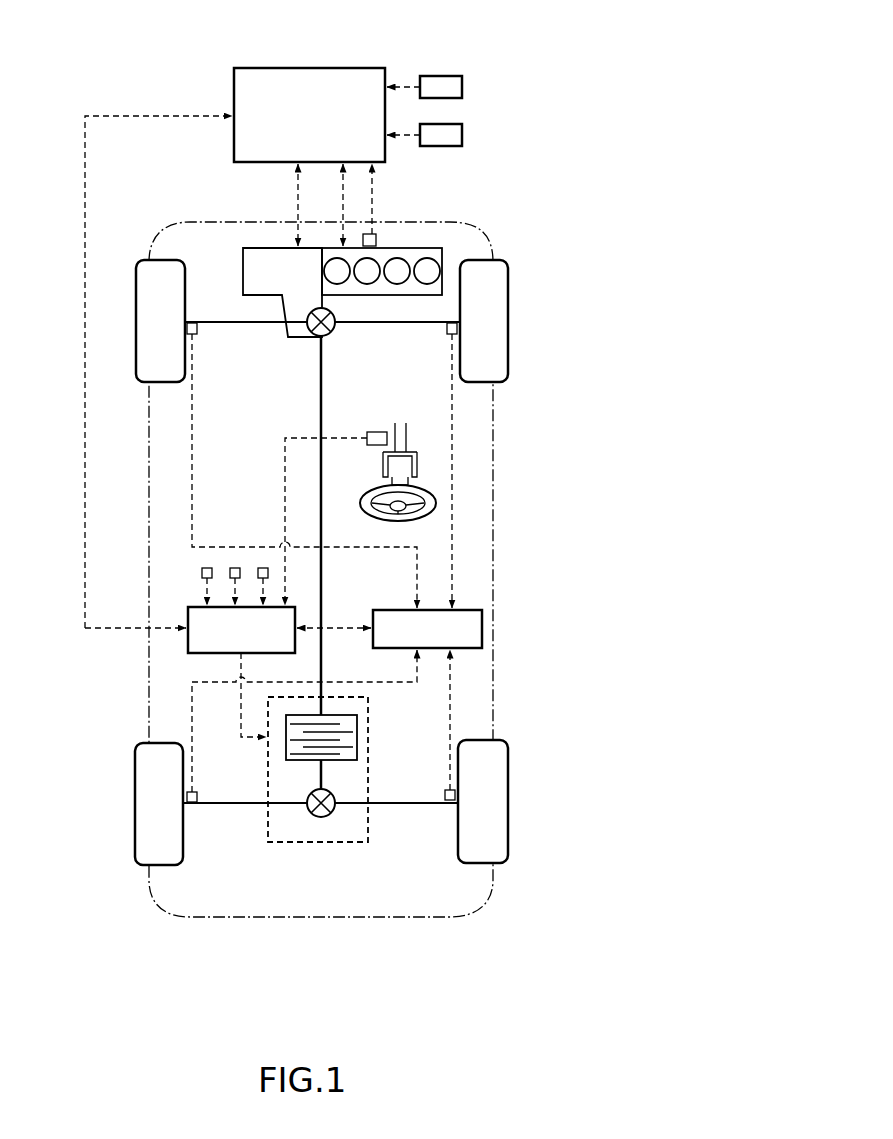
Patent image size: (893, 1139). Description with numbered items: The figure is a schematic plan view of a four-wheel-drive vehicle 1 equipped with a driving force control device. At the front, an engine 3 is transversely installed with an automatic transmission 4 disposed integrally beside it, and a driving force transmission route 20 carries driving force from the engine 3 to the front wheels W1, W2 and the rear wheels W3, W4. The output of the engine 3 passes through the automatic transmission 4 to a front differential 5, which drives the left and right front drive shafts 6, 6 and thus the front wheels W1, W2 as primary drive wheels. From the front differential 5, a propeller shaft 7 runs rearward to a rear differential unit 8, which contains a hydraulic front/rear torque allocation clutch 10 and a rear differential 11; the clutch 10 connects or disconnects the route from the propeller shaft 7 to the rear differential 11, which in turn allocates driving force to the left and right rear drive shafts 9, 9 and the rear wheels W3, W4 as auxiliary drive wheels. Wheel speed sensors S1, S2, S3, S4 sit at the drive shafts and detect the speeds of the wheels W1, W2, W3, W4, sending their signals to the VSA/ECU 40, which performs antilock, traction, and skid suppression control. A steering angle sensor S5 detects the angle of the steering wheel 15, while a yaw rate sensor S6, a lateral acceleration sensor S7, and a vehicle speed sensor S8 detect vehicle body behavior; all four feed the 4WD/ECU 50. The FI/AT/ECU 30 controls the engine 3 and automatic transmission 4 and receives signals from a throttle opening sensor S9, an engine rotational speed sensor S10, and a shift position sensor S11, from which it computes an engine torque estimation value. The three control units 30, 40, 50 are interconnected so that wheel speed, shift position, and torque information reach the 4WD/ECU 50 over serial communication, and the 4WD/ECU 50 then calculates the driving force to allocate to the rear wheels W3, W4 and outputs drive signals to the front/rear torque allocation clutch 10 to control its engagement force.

The four-wheel-drive vehicle 1 is at (502, 224).
The engine 3 is at (430, 248).
The automatic transmission 4 is at (262, 248).
The front differential 5 is at (331, 339).
The front drive shaft 6 is at (262, 323).
The propeller shaft 7 is at (324, 538).
The rear differential unit 8 is at (265, 712).
The rear drive shaft 9 is at (258, 803).
The front/rear torque allocation clutch 10 is at (359, 738).
The rear differential 11 is at (328, 819).
The steering wheel 15 is at (439, 492).
The driving force transmission route 20 is at (257, 475).
The FI/AT/ECU 30 is at (333, 66).
The VSA/ECU 40 is at (472, 609).
The 4WD/ECU 50 is at (186, 614).
The left front wheel speed sensor S1 is at (192, 334).
The right front wheel speed sensor S2 is at (452, 334).
The left rear wheel speed sensor S3 is at (192, 802).
The right rear wheel speed sensor S4 is at (450, 800).
The steering angle sensor S5 is at (368, 433).
The yaw rate sensor S6 is at (263, 568).
The lateral acceleration sensor S7 is at (235, 568).
The vehicle speed sensor S8 is at (207, 568).
The throttle opening sensor S9 is at (462, 87).
The engine rotational speed sensor S10 is at (374, 234).
The shift position sensor S11 is at (462, 135).
The left front wheel W1 is at (150, 260).
The right front wheel W2 is at (498, 260).
The left rear wheel W3 is at (150, 743).
The right rear wheel W4 is at (498, 741).